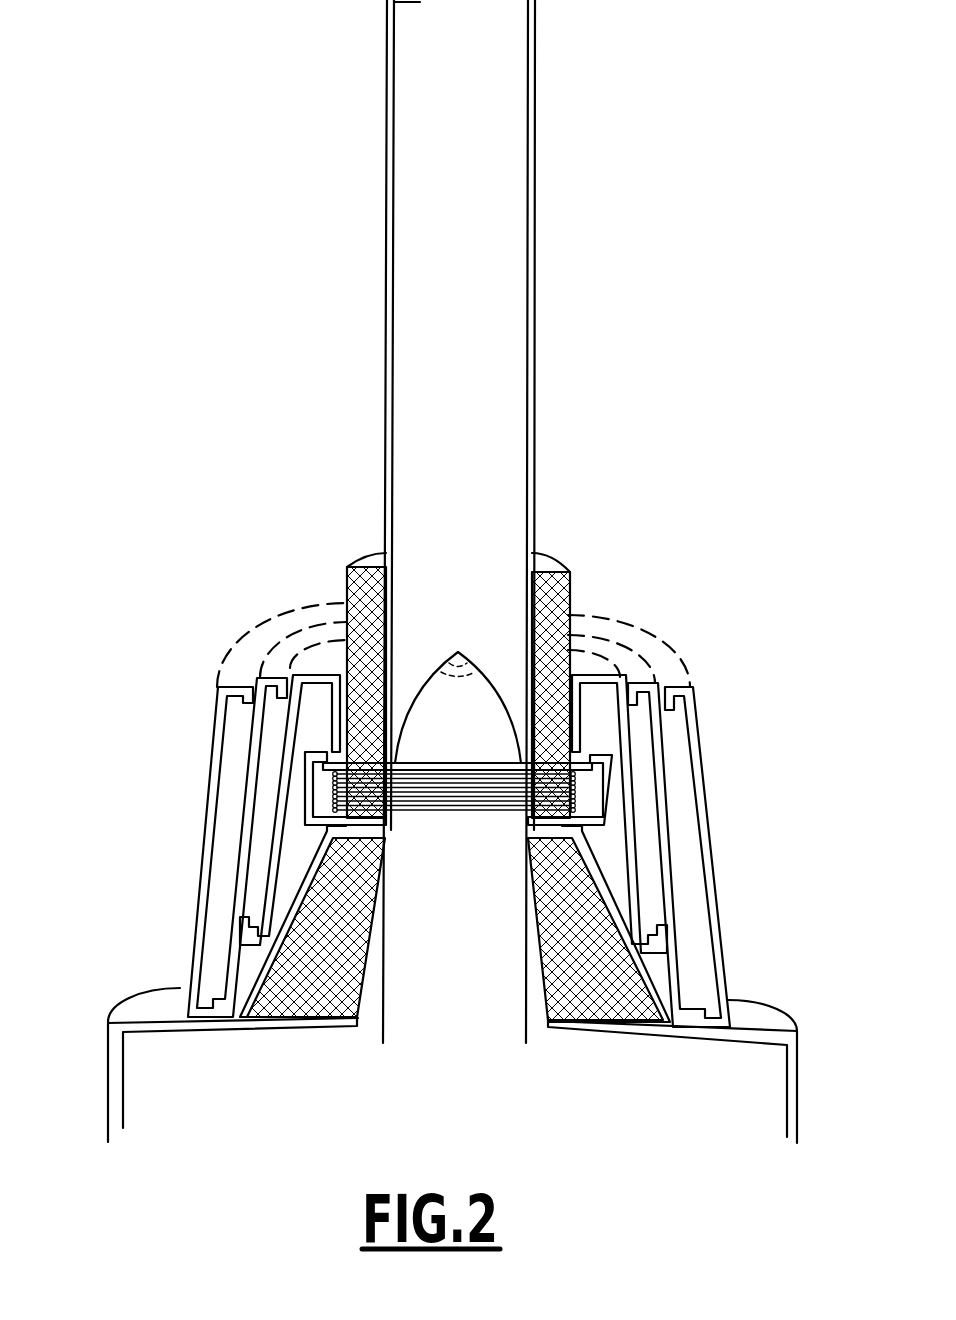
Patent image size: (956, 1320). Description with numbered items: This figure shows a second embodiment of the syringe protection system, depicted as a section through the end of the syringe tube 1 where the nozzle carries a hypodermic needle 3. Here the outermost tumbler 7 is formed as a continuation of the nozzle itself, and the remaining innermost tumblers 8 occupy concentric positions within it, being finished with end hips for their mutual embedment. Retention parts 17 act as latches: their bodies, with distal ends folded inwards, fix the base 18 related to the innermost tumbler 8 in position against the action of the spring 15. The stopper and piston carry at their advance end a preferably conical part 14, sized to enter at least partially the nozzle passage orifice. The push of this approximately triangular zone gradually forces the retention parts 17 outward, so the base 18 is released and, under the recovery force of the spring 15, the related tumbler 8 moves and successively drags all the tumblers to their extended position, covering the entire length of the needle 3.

The syringe tube 1 is at (117, 1083).
The hypodermic needle 3 is at (506, 486).
The outermost tumbler 7 is at (207, 798).
The innermost tumbler 8 is at (275, 858).
The conical part 14 is at (440, 705).
The spring 15 is at (578, 797).
The retention parts 17 is at (540, 824).
The base 18 is at (552, 770).